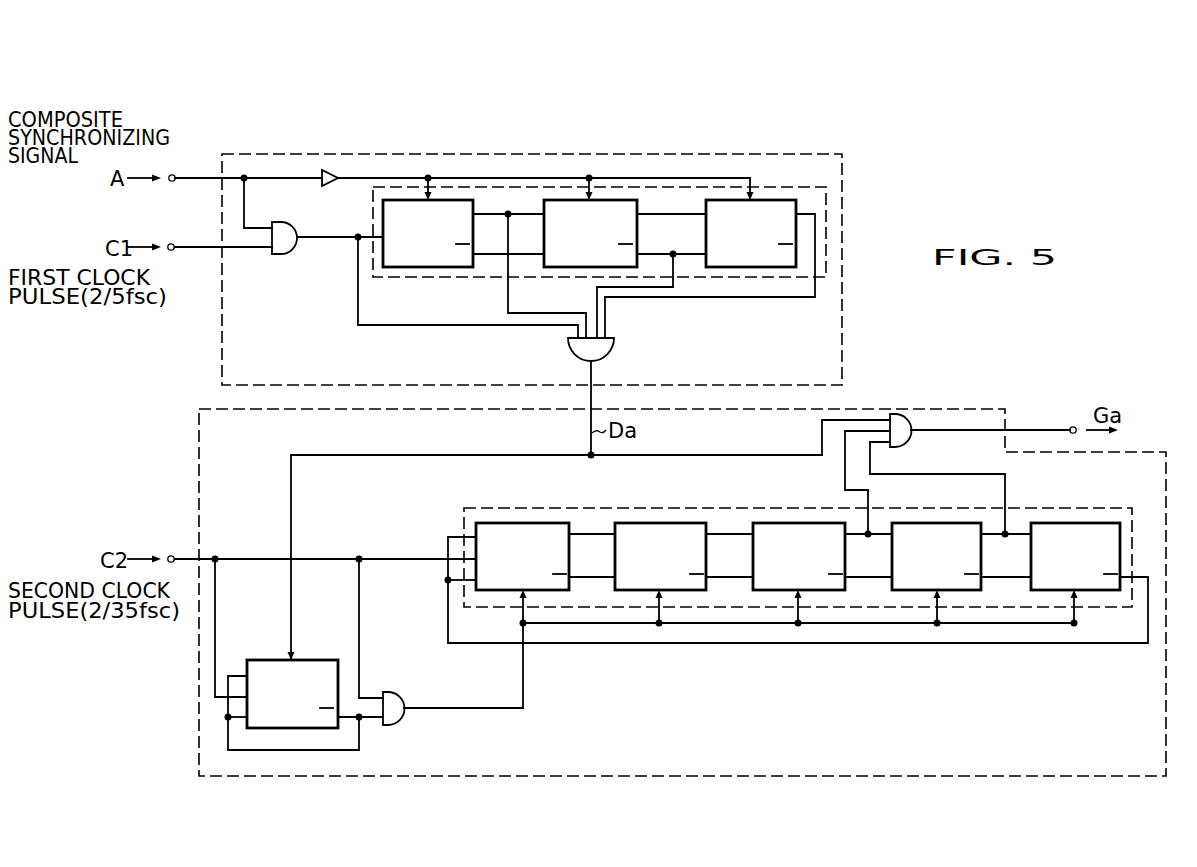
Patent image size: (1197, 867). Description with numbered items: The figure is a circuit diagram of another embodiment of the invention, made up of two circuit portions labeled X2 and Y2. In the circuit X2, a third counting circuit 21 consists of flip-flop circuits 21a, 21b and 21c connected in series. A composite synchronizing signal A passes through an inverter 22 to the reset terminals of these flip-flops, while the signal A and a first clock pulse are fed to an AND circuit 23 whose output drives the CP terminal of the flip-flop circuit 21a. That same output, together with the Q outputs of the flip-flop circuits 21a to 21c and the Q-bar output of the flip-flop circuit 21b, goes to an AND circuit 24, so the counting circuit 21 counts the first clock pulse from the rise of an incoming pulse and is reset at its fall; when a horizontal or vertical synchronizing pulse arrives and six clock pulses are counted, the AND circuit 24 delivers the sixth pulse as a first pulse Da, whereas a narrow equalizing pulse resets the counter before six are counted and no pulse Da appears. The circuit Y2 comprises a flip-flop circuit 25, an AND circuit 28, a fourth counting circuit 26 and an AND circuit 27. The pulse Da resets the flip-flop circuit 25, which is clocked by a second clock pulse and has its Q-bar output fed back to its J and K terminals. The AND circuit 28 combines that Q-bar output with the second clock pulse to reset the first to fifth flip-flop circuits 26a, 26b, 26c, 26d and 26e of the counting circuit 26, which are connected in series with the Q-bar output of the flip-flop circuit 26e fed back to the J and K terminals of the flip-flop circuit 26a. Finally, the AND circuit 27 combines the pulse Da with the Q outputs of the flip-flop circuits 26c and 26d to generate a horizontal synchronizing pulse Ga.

The third counting circuit 21 is at (510, 186).
The flip-flop circuit 21a is at (414, 268).
The flip-flop circuit 21b is at (546, 268).
The flip-flop circuit 21c is at (747, 269).
The inverter 22 is at (332, 168).
The AND circuit 23 is at (285, 256).
The AND circuit 24 is at (610, 350).
The flip-flop circuit 25 is at (263, 660).
The fourth counting circuit 26 is at (720, 513).
The first flip-flop circuit 26a is at (514, 523).
The second flip-flop circuit 26b is at (651, 523).
The third flip-flop circuit 26c is at (794, 523).
The fourth flip-flop circuit 26d is at (928, 523).
The fifth flip-flop circuit 26e is at (1067, 523).
The AND circuit 27 is at (900, 443).
The AND circuit 28 is at (400, 697).
The circuit X2 is at (773, 155).
The circuit Y2 is at (973, 407).